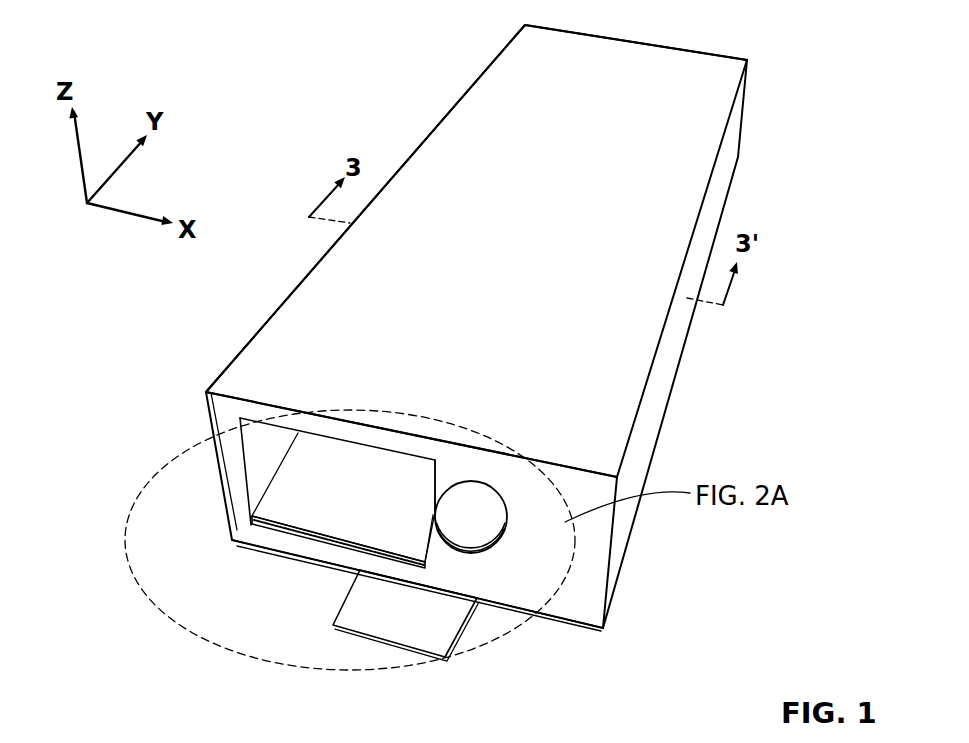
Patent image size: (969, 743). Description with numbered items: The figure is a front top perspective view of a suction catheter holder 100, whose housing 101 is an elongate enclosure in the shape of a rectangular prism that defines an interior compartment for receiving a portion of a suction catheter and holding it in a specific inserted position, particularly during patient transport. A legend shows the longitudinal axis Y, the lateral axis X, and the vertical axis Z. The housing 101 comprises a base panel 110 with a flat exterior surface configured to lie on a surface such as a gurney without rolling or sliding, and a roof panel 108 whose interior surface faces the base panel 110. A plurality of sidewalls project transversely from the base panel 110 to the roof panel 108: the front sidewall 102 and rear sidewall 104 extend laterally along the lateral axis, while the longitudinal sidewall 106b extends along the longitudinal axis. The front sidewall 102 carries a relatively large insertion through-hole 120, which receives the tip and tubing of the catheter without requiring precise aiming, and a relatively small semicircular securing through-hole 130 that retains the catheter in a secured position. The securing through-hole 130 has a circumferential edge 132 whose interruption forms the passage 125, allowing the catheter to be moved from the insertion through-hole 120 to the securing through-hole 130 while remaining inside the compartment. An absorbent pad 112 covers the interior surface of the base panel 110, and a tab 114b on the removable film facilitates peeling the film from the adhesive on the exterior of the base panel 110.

The suction catheter holder 100 is at (272, 40).
The housing 101 is at (288, 340).
The rear sidewall 104 is at (675, 36).
The roof panel 108 is at (423, 180).
The longitudinal sidewall 106b is at (673, 347).
The front sidewall 102 is at (588, 537).
The base panel 110 is at (594, 684).
The absorbent pad 112 is at (297, 513).
The tab 114b is at (350, 614).
The insertion through-hole 120 is at (264, 452).
The passage 125 is at (432, 513).
The securing through-hole 130 is at (467, 496).
The circumferential edge 132 is at (480, 562).